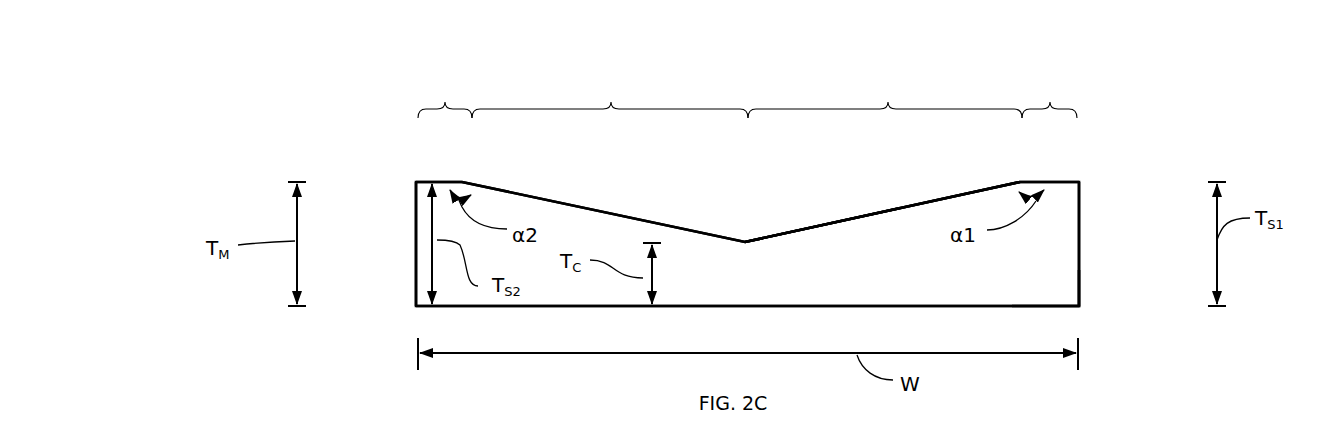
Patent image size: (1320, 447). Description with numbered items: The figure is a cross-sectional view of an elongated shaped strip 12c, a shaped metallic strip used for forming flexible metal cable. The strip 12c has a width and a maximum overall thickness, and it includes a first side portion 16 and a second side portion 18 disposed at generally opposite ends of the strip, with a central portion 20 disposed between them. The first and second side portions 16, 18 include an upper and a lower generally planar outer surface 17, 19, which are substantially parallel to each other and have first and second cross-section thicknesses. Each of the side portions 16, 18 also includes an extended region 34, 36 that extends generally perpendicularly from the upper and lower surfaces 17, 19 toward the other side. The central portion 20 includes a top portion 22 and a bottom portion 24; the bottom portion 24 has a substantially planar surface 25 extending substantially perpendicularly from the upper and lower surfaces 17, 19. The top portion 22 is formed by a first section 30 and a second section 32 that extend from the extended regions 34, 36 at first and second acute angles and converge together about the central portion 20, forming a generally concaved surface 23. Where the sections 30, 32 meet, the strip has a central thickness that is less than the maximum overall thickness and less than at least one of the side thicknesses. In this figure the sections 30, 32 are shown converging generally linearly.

The elongated shaped strip 12c is at (276, 94).
The first side portion 16 is at (1095, 156).
The upper generally planar outer surface 17 is at (1083, 269).
The second side portion 18 is at (416, 157).
The lower generally planar outer surface 19 is at (414, 277).
The central portion 20 is at (769, 181).
The top portion 22 is at (930, 202).
The concaved surface 23 is at (843, 219).
The bottom portion 24 is at (1012, 306).
The substantially planar surface 25 is at (885, 310).
The first section 30 is at (888, 103).
The second section 32 is at (611, 103).
The extended region 34 is at (1050, 103).
The extended region 36 is at (445, 103).